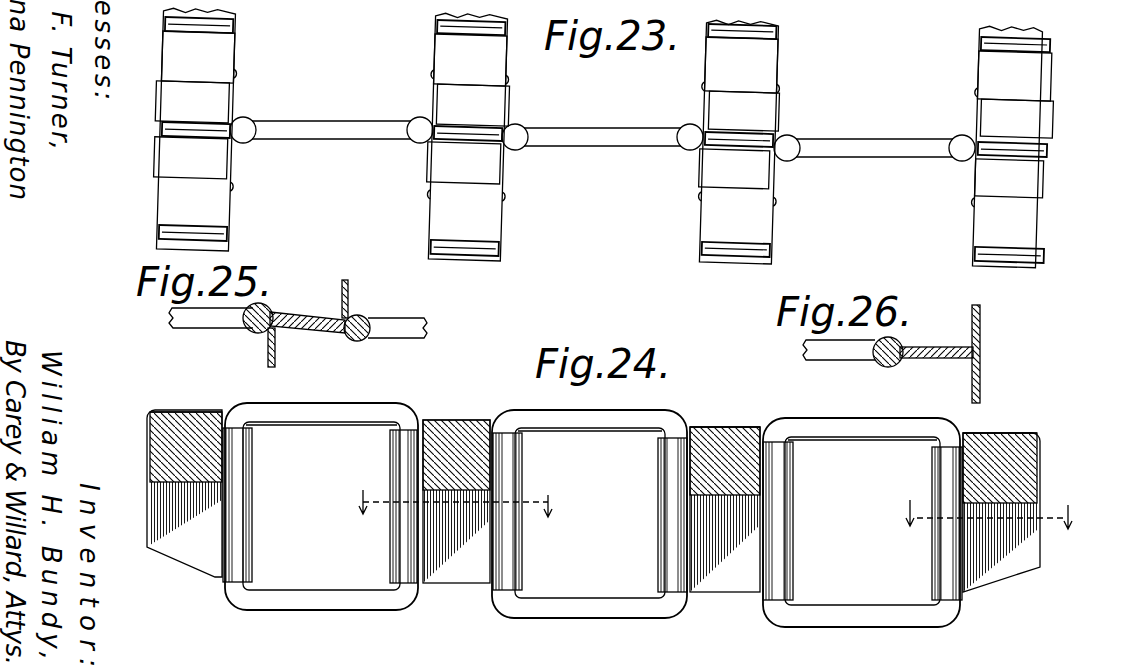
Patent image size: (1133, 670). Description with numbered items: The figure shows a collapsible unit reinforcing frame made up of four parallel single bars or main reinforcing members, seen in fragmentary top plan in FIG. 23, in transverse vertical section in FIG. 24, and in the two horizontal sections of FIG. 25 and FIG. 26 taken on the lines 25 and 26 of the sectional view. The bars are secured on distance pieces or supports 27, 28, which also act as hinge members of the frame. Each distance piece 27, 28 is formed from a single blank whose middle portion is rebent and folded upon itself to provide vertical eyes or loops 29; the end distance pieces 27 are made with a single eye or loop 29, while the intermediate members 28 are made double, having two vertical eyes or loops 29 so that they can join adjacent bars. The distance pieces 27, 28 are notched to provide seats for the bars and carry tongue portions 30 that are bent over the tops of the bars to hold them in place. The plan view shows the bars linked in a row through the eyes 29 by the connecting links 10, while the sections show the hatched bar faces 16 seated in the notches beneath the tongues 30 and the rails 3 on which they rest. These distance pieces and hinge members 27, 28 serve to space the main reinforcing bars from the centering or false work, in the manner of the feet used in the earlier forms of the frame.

In FIG. 23, the rail 3 is at (207, 232).
In FIG. 23, the connecting bar 10 is at (336, 132).
In FIG. 25, the connecting bar 10 is at (190, 316).
In FIG. 26, the connecting bar 10 is at (835, 355).
In FIG. 24, the connecting bar 10 is at (333, 418).
In FIG. 23, the block face 16 is at (212, 62).
In FIG. 24, the block face 16 is at (163, 432).
In FIG. 24, the section line 25— 25 is at (457, 498).
In FIG. 24, the section line 26— 26 is at (994, 511).
In FIG. 23, the distance piece 27 is at (156, 163).
In FIG. 26, the distance piece 27 is at (928, 359).
In FIG. 24, the distance piece 27 is at (185, 548).
In FIG. 23, the distance piece 28 is at (510, 110).
In FIG. 25, the distance piece 28 is at (310, 333).
In FIG. 24, the distance piece 28 is at (463, 570).
In FIG. 23, the vertical eye or loop 29 is at (245, 144).
In FIG. 25, the vertical eye or loop 29 is at (253, 333).
In FIG. 26, the vertical eye or loop 29 is at (905, 345).
In FIG. 24, the vertical eye or loop 29 is at (240, 535).
In FIG. 23, the tongue portion 30 is at (457, 99).
In FIG. 24, the tongue portion 30 is at (183, 414).